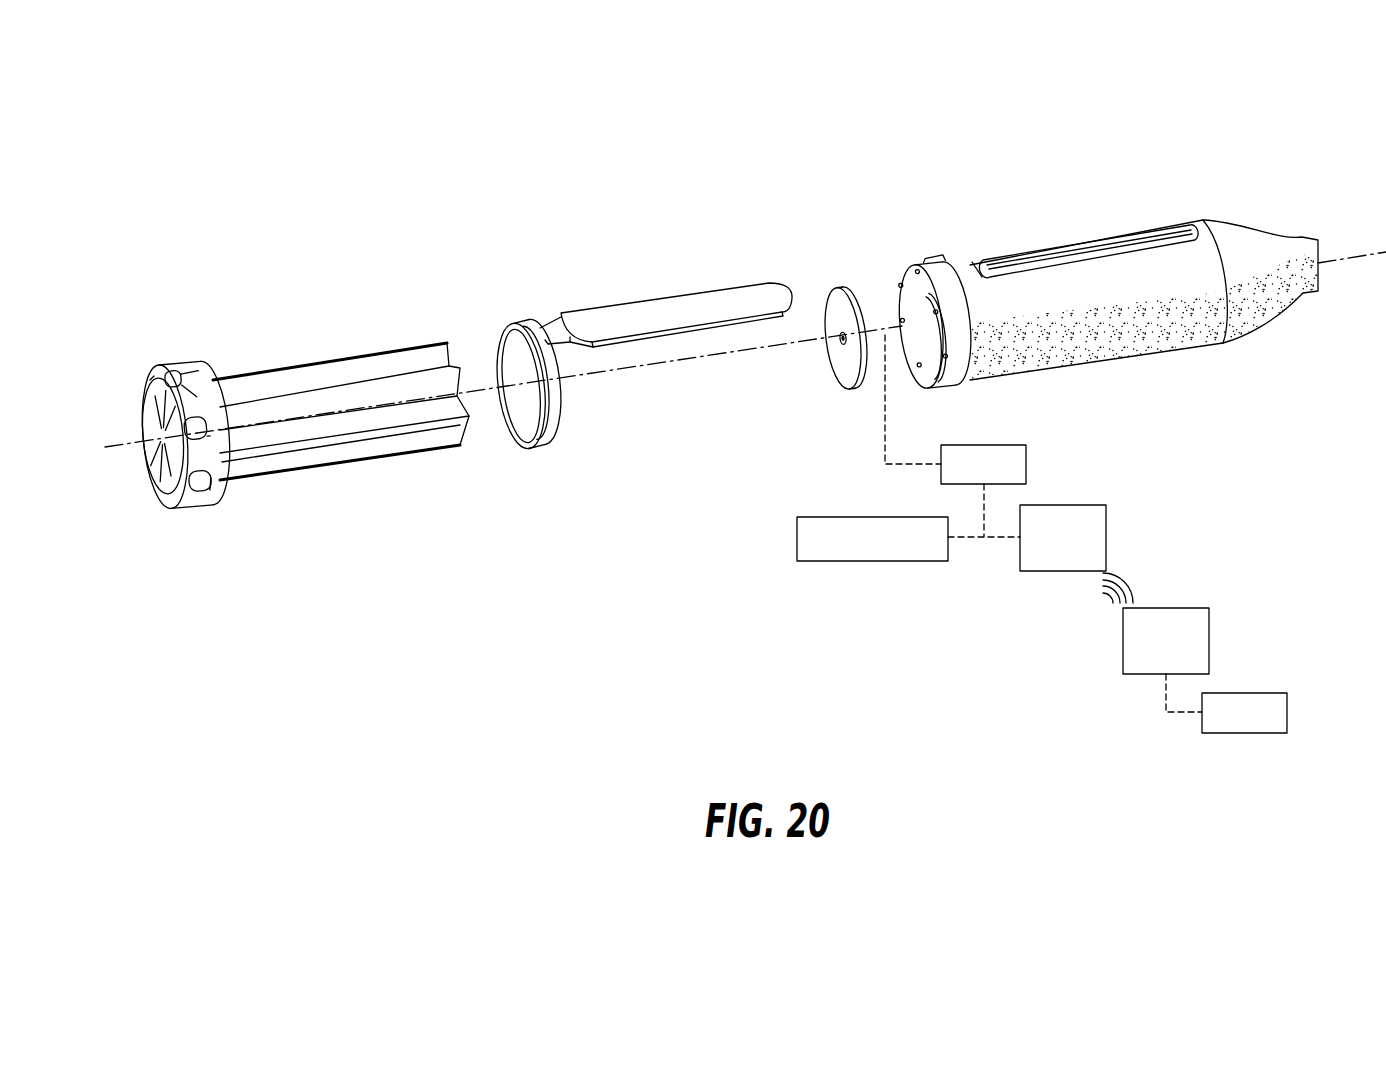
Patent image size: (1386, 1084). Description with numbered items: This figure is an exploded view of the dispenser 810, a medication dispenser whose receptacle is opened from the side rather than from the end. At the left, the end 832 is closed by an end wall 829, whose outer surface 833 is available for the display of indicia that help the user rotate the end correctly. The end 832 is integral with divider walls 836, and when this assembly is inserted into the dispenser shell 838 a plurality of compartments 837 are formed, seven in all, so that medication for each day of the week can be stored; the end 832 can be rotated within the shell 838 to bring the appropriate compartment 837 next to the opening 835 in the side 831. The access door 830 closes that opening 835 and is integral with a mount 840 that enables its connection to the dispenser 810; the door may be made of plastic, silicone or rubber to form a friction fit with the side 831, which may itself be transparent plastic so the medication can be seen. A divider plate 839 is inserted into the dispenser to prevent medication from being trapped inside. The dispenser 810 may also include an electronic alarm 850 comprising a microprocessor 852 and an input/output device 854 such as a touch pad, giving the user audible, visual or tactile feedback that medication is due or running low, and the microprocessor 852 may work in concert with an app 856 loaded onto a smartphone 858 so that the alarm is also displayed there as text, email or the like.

The dispenser 810 is at (886, 206).
The end wall 829 is at (153, 376).
The access door 830 is at (677, 300).
The side 831 is at (1143, 290).
The end 832 is at (182, 500).
The surface 833 is at (158, 481).
The opening 835 is at (1060, 260).
The divider walls 836 is at (327, 360).
The compartments 837 is at (452, 435).
The dispenser shell 838 is at (945, 262).
The divider plate 839 is at (835, 287).
The mount 840 is at (520, 322).
The electronic alarm 850 is at (984, 445).
The microprocessor 852 is at (847, 517).
The input/output device 854 is at (1062, 505).
The app 856 is at (1250, 693).
The smartphone 858 is at (1163, 608).